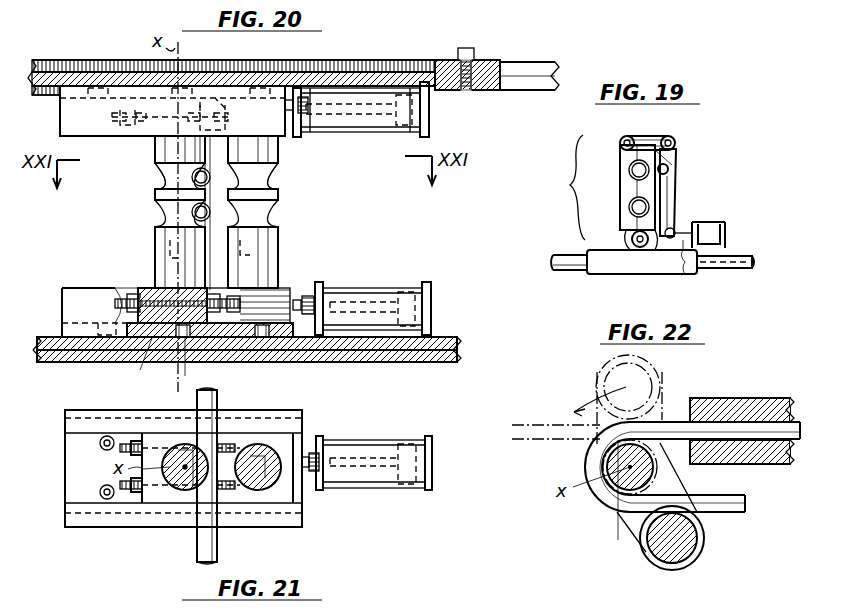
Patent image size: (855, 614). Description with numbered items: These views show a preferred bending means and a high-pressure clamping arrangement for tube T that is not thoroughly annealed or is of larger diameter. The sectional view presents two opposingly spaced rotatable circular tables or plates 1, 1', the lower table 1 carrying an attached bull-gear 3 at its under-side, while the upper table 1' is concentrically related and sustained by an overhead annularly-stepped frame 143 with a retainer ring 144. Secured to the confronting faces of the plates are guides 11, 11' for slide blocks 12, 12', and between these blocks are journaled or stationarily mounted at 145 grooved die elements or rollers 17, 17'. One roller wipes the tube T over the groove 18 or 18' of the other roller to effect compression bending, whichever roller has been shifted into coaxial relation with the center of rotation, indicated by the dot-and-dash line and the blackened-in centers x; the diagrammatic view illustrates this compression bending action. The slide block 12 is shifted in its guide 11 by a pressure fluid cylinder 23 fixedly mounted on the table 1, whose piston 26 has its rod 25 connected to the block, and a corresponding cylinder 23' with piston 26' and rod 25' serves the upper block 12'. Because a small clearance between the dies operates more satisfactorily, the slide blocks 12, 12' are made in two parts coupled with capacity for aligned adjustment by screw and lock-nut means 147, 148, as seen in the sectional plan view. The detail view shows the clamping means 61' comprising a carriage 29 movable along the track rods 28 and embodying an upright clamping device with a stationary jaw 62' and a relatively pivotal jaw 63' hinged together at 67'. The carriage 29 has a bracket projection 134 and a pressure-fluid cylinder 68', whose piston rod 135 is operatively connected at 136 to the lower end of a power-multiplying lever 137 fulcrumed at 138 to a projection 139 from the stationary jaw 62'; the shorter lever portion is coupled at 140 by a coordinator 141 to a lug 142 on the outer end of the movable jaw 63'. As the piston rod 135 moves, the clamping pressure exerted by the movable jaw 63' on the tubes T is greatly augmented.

In FIG. 20, the circular table 1 is at (254, 324).
In FIG. 20, the upper circular table 1' is at (231, 66).
In FIG. 20, the bull-gear 3 is at (460, 353).
In FIG. 20, the dove-tail guide 11 is at (101, 301).
In FIG. 21, the dove-tail guide 11 is at (183, 485).
In FIG. 20, the guide 11' is at (172, 111).
In FIG. 20, the slide block 12 is at (219, 295).
In FIG. 21, the slide block 12 is at (241, 462).
In FIG. 22, the slide block 12 is at (665, 495).
In FIG. 20, the slide block 12' is at (198, 210).
In FIG. 20, the die element 17 is at (134, 199).
In FIG. 21, the die element 17 is at (162, 419).
In FIG. 20, the die element 17' is at (301, 199).
In FIG. 21, the die element 17' is at (264, 417).
In FIG. 22, the die element 17' is at (633, 468).
In FIG. 20, the bend-forming groove 18 is at (142, 199).
In FIG. 21, the bend-forming groove 18 is at (168, 521).
In FIG. 20, the bend-forming groove 18' is at (294, 198).
In FIG. 21, the bend-forming groove 18' is at (280, 519).
In FIG. 22, the bend-forming groove 18' is at (680, 586).
In FIG. 20, the pressure fluid cylinder 23 is at (373, 294).
In FIG. 21, the pressure fluid cylinder 23 is at (367, 487).
In FIG. 20, the pressure fluid cylinder 23' is at (361, 123).
In FIG. 20, the piston rod 25 is at (345, 284).
In FIG. 21, the piston rod 25 is at (364, 438).
In FIG. 20, the piston rod 25' is at (351, 133).
In FIG. 20, the piston 26 is at (409, 290).
In FIG. 21, the piston 26 is at (409, 447).
In FIG. 20, the piston 26' is at (430, 110).
In FIG. 19, the track rods 28 is at (560, 255).
In FIG. 19, the carriage 29 is at (598, 270).
In FIG. 19, the clamping device 61' is at (560, 187).
In FIG. 19, the stationary jaw 62' is at (688, 192).
In FIG. 22, the stationary jaw 62' is at (742, 396).
In FIG. 19, the pivotal jaw 63' is at (622, 187).
In FIG. 22, the pivotal jaw 63' is at (743, 469).
In FIG. 19, the hinge 67' is at (624, 238).
In FIG. 19, the pressure-fluid cylinder 68' is at (715, 227).
In FIG. 19, the bracket projection 134 is at (706, 271).
In FIG. 19, the piston rod 135 is at (688, 275).
In FIG. 19, the connection 136 is at (642, 262).
In FIG. 19, the power-multiplying lever 137 is at (672, 187).
In FIG. 19, the fulcrum 138 is at (668, 166).
In FIG. 19, the projection 139 is at (668, 153).
In FIG. 19, the coupling 140 is at (675, 139).
In FIG. 19, the coordinator 141 is at (658, 136).
In FIG. 19, the lug 142 is at (627, 136).
In FIG. 20, the annularly-stepped frame 143 is at (508, 66).
In FIG. 20, the retainer ring 144 is at (451, 60).
In FIG. 20, the journal mounting 145 is at (210, 292).
In FIG. 20, the screw 147 is at (225, 110).
In FIG. 21, the screw 147 is at (118, 480).
In FIG. 20, the lock-nut 148 is at (128, 114).
In FIG. 21, the lock-nut 148 is at (130, 440).
In FIG. 20, the tube T is at (208, 195).
In FIG. 21, the tube T is at (219, 557).
In FIG. 19, the tube T is at (628, 169).
In FIG. 22, the tube T is at (745, 505).